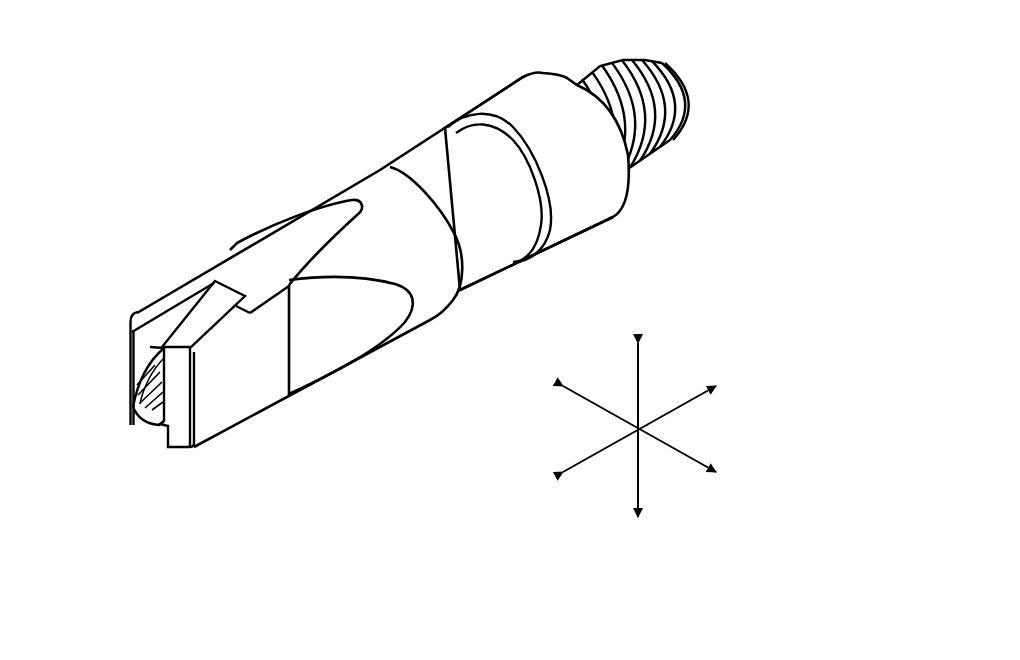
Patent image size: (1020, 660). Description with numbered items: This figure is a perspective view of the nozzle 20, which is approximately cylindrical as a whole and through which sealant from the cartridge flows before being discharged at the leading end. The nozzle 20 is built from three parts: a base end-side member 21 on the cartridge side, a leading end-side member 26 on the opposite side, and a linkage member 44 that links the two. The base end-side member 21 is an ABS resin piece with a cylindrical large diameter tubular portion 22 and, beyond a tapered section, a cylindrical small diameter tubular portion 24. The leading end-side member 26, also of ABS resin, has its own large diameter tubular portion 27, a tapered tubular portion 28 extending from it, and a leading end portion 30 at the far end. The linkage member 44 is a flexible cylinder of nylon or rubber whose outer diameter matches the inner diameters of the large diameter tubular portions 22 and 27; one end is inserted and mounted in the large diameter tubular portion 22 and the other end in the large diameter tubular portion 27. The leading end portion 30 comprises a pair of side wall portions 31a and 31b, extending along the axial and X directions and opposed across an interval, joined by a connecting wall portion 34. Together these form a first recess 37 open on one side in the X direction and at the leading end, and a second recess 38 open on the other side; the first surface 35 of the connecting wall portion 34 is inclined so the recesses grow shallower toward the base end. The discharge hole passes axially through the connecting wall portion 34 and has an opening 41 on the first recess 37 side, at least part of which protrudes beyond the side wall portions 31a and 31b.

The nozzle 20 is at (349, 80).
The base end-side member 21 is at (544, 62).
The large diameter tubular portion 22 is at (502, 100).
The small diameter tubular portion 24 is at (628, 62).
The leading end-side member 26 is at (313, 180).
The large diameter tubular portion 27 is at (365, 178).
The tapered tubular portion 28 is at (287, 240).
The leading end portion 30 is at (117, 320).
The side wall portion 31a is at (230, 405).
The side wall portion 31b is at (140, 320).
The connecting wall portion 34 is at (147, 410).
The first surface 35 is at (193, 321).
The first recess 37 is at (148, 347).
The second recess 38 is at (158, 429).
The opening 41 is at (137, 393).
The linkage member 44 is at (425, 167).